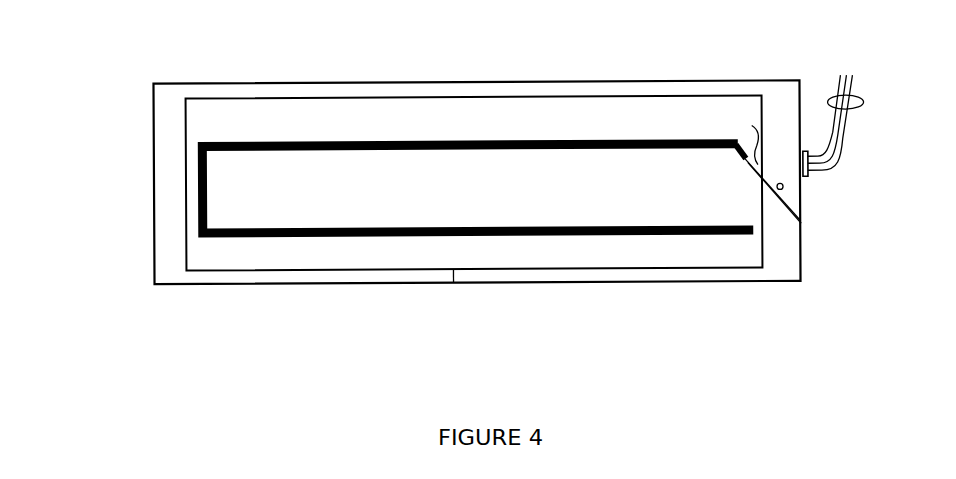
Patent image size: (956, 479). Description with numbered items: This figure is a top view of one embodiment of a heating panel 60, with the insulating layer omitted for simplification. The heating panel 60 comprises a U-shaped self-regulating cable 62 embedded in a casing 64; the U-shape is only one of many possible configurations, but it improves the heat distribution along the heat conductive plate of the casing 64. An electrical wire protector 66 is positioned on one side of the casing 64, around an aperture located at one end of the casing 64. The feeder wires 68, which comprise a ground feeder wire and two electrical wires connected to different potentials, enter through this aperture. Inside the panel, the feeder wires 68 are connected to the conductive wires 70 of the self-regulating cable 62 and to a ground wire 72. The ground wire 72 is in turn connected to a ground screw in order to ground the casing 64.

The heating panel 60 is at (112, 60).
The self-regulating cable 62 is at (505, 233).
The casing 64 is at (175, 265).
The electrical wire protector 66 is at (808, 178).
The feeder wires 68 is at (862, 107).
The conductive wires 70 is at (800, 222).
The ground wire 72 is at (752, 127).